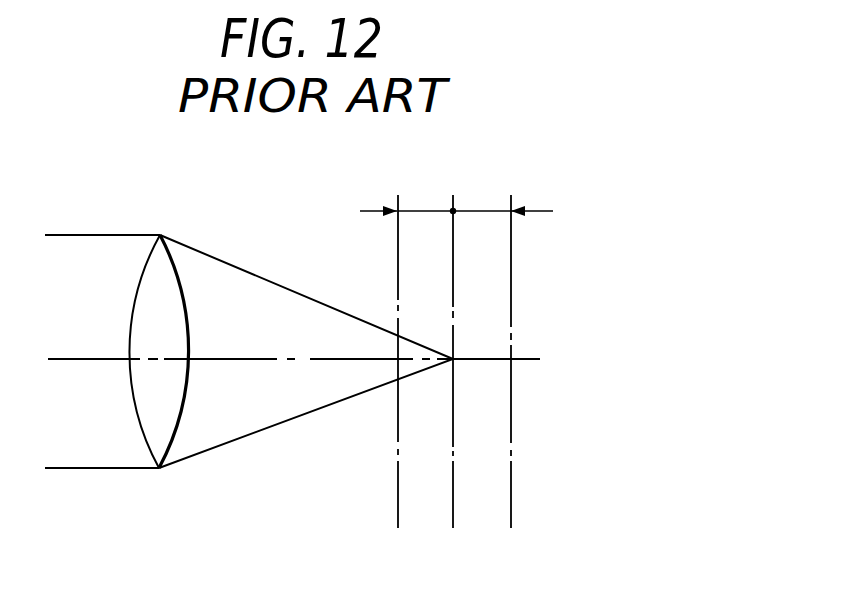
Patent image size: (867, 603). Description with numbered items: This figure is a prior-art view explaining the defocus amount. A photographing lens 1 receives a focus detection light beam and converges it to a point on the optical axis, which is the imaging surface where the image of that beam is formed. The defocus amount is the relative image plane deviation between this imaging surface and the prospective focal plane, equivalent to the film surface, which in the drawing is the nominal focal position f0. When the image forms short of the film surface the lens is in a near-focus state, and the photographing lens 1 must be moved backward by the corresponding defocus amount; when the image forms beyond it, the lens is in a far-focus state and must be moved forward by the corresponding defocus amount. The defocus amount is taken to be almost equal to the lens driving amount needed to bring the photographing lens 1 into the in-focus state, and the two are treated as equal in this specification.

The photographing lens 1 is at (136, 292).
The nominal focal plane f0 is at (453, 348).